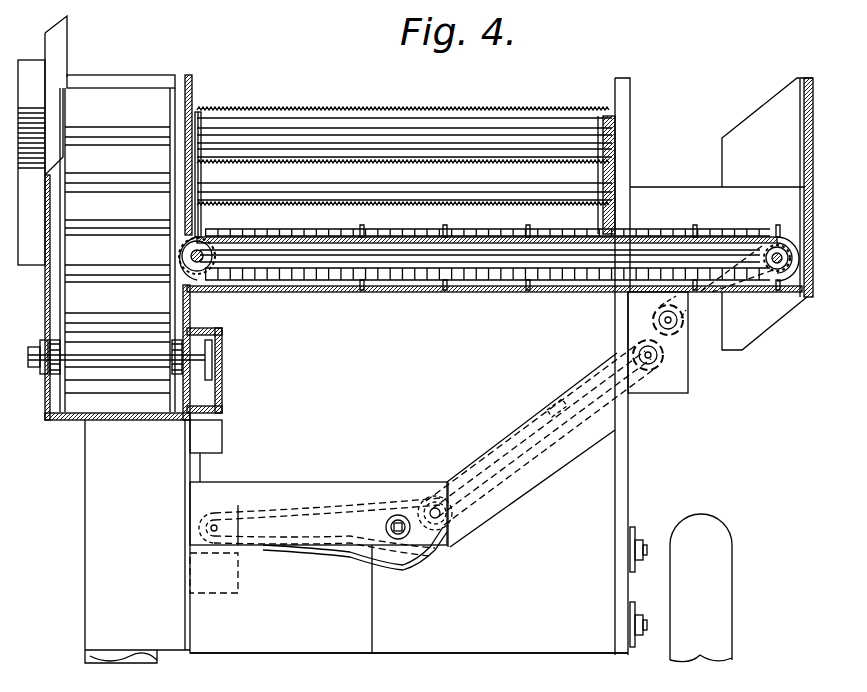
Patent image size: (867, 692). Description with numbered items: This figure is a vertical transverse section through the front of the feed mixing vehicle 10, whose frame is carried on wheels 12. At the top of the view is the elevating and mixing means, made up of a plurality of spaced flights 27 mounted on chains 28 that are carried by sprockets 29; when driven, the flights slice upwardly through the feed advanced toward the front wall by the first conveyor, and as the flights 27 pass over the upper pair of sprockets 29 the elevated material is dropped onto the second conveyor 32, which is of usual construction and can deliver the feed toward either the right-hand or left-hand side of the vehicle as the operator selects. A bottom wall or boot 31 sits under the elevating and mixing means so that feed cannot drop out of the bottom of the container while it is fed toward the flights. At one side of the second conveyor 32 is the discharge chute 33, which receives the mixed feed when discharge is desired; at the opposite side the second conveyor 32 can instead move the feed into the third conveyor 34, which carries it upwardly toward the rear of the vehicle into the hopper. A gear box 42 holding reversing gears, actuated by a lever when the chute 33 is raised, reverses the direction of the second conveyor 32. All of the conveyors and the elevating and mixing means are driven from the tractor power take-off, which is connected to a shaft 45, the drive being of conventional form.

The vehicle 10 is at (371, 492).
The wheels 12 is at (713, 587).
The flights 27 is at (508, 165).
The chains 28 is at (588, 180).
The sprockets 29 is at (198, 112).
The bottom wall or boot 31 is at (565, 650).
The second conveyor 32 is at (405, 226).
The discharge chute 33 is at (790, 100).
The third conveyor 34 is at (135, 102).
The gear box 42 is at (677, 373).
The shaft 45 is at (398, 515).